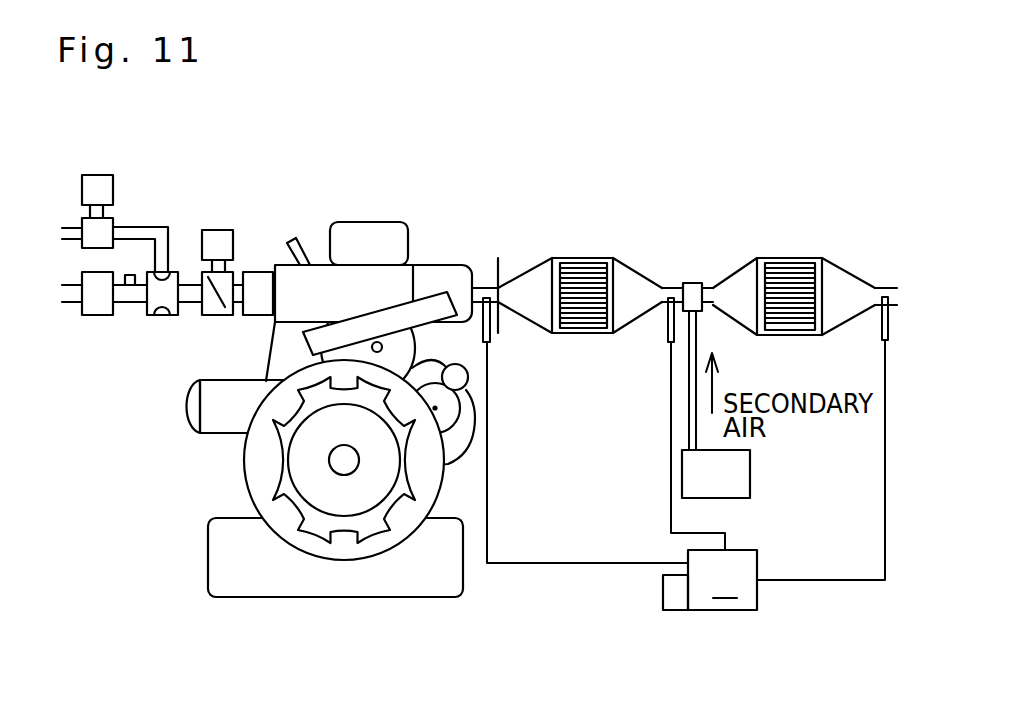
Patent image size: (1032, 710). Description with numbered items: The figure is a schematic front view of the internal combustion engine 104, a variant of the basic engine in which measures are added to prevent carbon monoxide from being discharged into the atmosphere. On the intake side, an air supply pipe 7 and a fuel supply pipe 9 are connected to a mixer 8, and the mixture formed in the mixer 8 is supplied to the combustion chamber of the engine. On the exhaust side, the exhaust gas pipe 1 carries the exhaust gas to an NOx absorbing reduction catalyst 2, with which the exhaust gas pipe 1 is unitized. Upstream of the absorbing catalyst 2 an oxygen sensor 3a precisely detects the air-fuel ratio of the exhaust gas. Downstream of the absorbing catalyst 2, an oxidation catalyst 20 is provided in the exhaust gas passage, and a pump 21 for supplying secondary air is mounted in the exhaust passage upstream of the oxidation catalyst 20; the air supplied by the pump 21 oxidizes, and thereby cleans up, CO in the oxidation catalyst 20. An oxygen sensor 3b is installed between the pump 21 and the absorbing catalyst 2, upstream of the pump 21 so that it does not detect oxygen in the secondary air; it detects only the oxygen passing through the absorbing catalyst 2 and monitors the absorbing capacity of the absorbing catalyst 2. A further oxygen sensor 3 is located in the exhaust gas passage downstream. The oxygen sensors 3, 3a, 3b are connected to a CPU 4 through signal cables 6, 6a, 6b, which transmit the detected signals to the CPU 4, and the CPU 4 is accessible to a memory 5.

The internal combustion engine 104 is at (279, 164).
The fuel supply pipe 9 is at (137, 225).
The air supply pipe 7 is at (130, 303).
The mixer 8 is at (162, 315).
The exhaust gas pipe 1 is at (485, 287).
The NOx absorbing reduction catalyst 2 is at (585, 267).
The oxidation catalyst 20 is at (780, 267).
The oxygen sensor 3a is at (492, 328).
The oxygen sensor 3b is at (663, 328).
The oxygen sensor 3 is at (880, 320).
The signal cable 6b is at (672, 427).
The signal cable 6a is at (543, 560).
The signal cable 6 is at (885, 515).
The pump 21 is at (750, 468).
The CPU 4 is at (722, 580).
The memory 5 is at (675, 612).